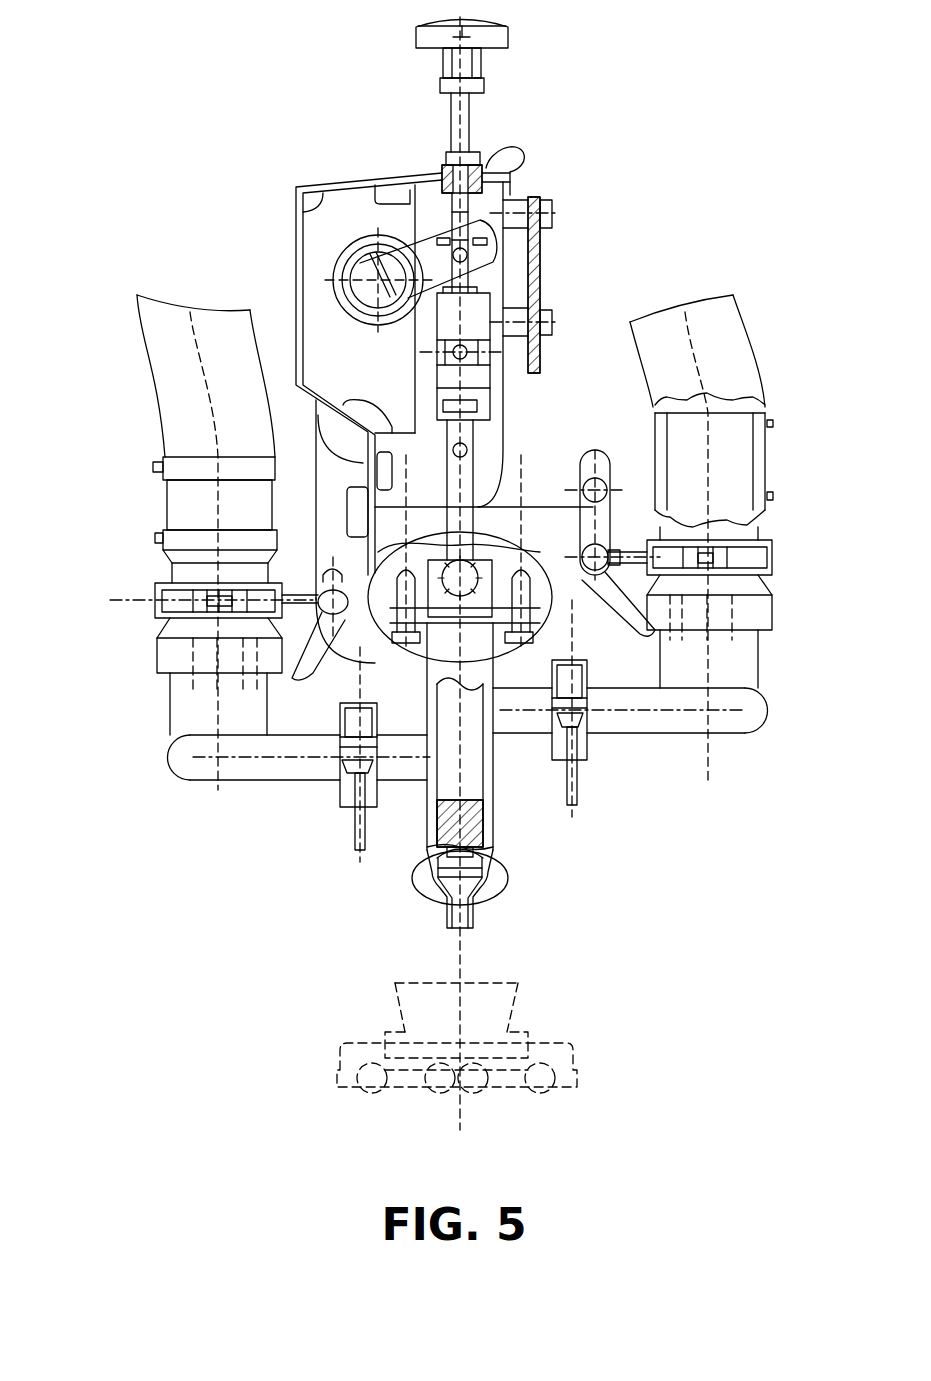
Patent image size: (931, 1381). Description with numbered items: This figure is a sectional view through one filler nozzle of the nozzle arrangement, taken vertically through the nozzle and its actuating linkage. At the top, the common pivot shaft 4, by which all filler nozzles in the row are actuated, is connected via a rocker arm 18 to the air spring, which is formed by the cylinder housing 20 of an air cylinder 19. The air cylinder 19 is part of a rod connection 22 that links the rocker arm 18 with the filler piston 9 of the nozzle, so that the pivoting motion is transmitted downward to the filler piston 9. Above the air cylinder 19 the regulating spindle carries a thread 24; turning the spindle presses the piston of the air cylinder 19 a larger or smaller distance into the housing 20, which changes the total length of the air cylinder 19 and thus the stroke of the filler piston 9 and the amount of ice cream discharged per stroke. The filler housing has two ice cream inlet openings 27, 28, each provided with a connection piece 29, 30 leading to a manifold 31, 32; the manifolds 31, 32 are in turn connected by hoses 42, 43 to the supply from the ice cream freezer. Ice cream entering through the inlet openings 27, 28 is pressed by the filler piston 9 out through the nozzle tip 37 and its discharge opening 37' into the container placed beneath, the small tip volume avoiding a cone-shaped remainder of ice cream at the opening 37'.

The pivot shaft 4 is at (358, 262).
The filler piston 9 is at (467, 572).
The rocker arm 18 is at (400, 228).
The air cylinder 19 is at (527, 243).
The cylinder housing 20 is at (508, 268).
The rod connection 22 is at (465, 447).
The thread 24 is at (472, 110).
The ice cream inlet opening 27 is at (500, 735).
The ice cream inlet opening 28 is at (428, 778).
The connection piece 29 is at (515, 725).
The connection piece 30 is at (390, 767).
The manifold 31 is at (760, 505).
The manifold 32 is at (178, 508).
The nozzle tip 37 is at (518, 888).
The discharge opening 37' is at (457, 1073).
The hose 42 is at (743, 355).
The hose 43 is at (173, 362).